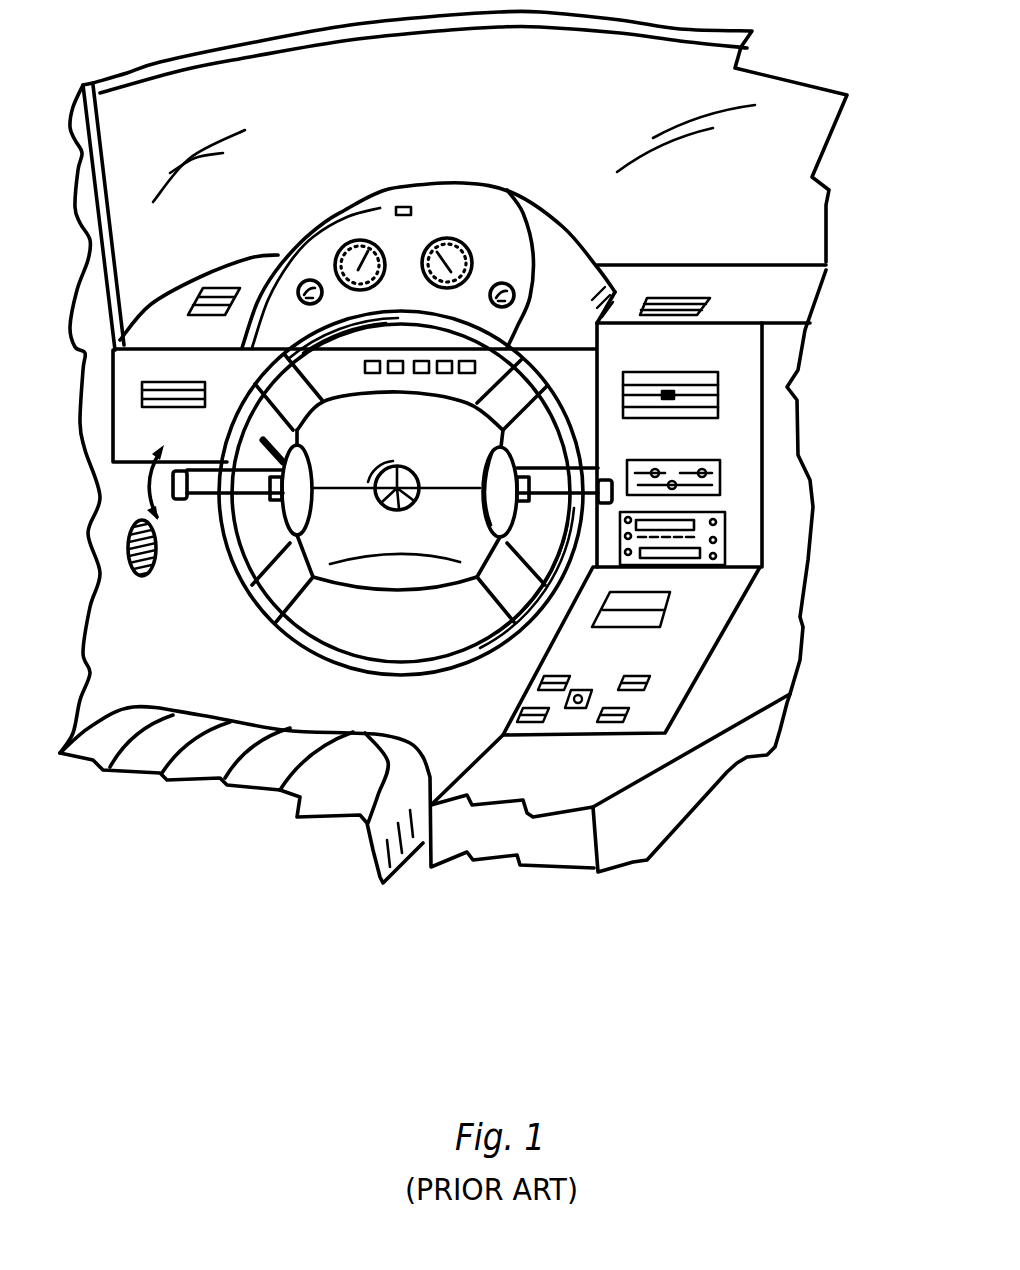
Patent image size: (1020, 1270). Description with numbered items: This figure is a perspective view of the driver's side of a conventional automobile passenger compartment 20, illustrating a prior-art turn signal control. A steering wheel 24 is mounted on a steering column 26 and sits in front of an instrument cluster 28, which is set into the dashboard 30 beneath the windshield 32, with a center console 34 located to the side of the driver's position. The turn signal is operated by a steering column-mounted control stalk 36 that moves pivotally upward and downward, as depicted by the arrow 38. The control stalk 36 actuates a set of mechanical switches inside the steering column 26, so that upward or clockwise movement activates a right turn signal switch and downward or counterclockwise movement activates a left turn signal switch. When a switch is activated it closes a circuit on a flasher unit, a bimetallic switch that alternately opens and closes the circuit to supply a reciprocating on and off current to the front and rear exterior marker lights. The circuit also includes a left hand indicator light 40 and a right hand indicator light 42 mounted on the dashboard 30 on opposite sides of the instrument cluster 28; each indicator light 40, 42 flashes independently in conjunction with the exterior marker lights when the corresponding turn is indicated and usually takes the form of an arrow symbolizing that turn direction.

The passenger compartment 20 is at (838, 200).
The steering wheel 24 is at (507, 190).
The steering column 26 is at (278, 516).
The instrument cluster 28 is at (349, 193).
The dashboard 30 is at (627, 255).
The windshield 32 is at (498, 88).
The center console 34 is at (752, 516).
The control stalk 36 is at (210, 495).
The arrow 38 is at (143, 483).
The left hand indicator light 40 is at (307, 254).
The right hand indicator light 42 is at (482, 243).